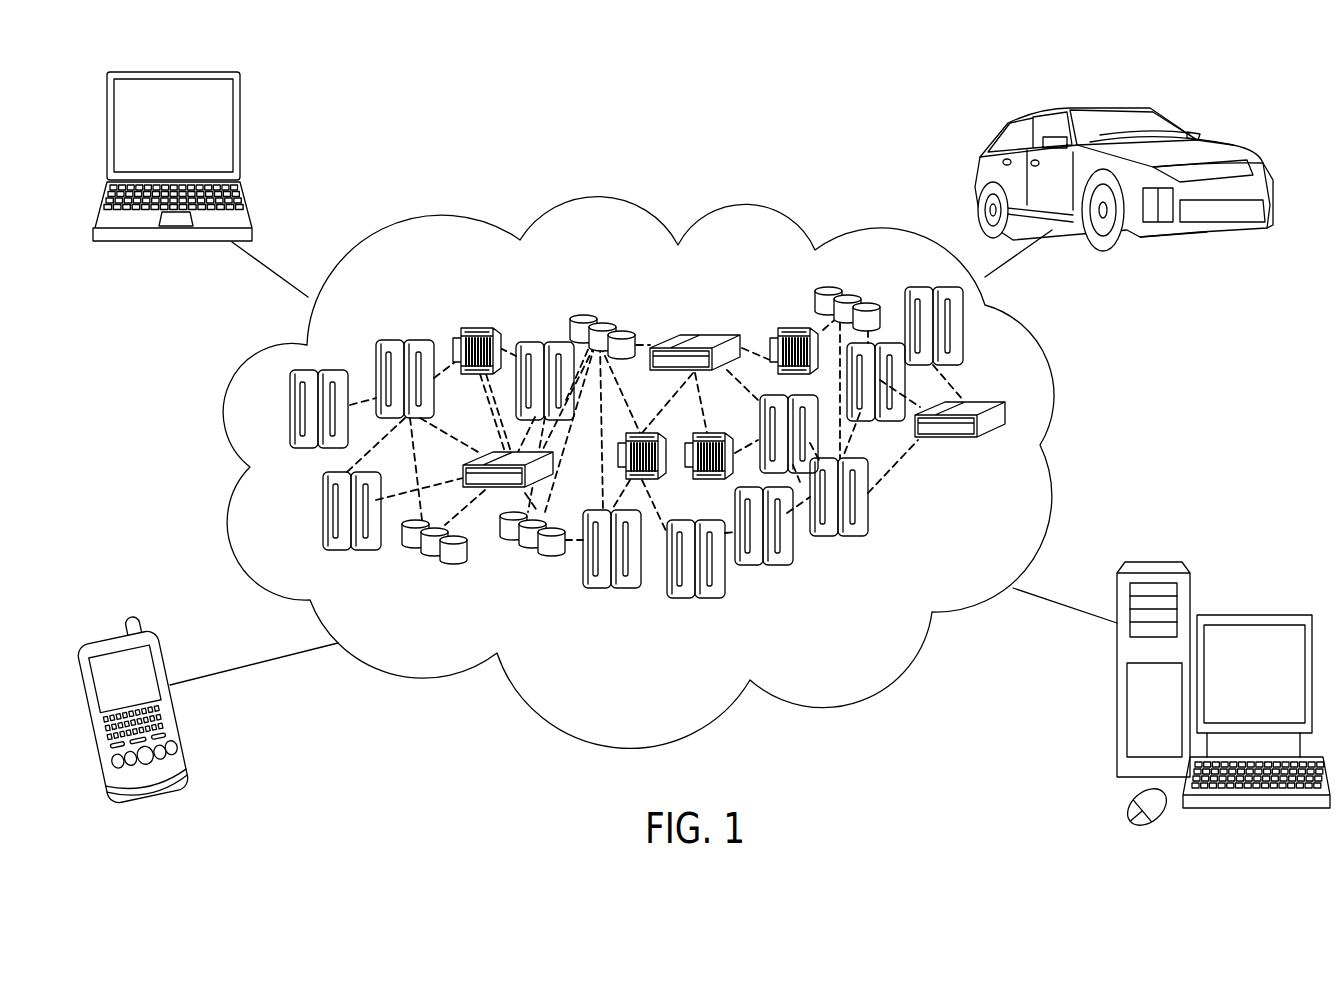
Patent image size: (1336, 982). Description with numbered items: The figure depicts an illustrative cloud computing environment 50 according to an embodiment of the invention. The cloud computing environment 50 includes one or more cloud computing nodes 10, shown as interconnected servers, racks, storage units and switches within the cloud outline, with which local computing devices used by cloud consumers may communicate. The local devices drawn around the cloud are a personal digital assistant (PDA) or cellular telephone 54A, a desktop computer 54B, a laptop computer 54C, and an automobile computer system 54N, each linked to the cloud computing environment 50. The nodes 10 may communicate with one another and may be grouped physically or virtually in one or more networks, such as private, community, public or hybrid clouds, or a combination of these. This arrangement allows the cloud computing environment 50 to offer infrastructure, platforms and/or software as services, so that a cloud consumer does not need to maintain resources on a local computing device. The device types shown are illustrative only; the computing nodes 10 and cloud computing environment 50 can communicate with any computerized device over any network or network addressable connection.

The cloud computing nodes 10 is at (1028, 473).
The cloud computing environment 50 is at (1053, 381).
The personal digital assistant (PDA) or cellular telephone 54A is at (180, 720).
The desktop computer 54B is at (1256, 615).
The laptop computer 54C is at (241, 128).
The automobile computer system 54N is at (975, 170).